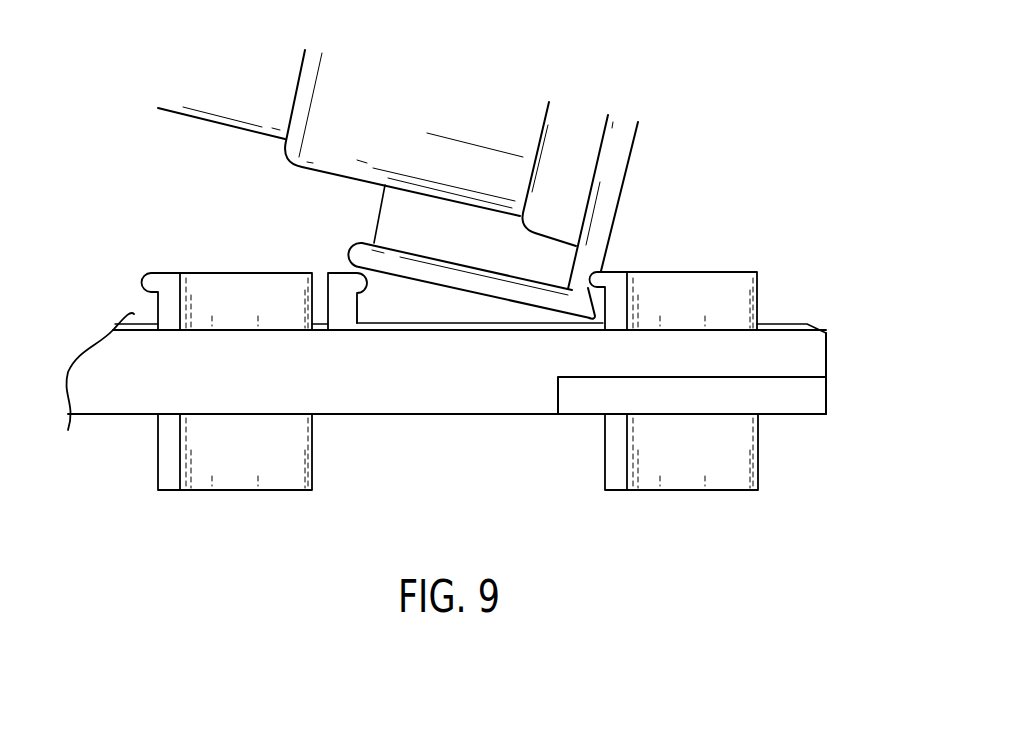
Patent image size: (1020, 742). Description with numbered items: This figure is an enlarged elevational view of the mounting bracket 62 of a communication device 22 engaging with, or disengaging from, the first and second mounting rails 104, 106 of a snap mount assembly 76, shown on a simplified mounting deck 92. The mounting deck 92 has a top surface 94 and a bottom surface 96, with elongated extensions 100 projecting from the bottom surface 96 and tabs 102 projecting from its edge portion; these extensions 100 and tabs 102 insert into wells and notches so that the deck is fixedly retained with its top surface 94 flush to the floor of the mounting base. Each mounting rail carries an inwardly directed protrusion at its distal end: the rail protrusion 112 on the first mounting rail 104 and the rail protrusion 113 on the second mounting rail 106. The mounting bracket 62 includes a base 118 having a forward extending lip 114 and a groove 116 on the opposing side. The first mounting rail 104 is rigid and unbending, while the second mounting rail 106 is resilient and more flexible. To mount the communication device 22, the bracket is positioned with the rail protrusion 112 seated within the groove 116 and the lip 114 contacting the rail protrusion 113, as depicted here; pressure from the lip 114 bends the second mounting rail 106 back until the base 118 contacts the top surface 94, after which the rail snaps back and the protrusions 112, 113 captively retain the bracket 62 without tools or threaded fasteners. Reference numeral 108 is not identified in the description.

The communication device 22 is at (450, 110).
The mounting bracket 62 is at (412, 226).
The snap mount assembly 76 is at (106, 422).
The mounting deck 92 is at (70, 354).
The top surface 94 is at (790, 322).
The bottom surface 96 is at (432, 416).
The elongated extension 100 is at (232, 482).
The tab 102 is at (792, 408).
The first mounting rail 104 is at (171, 266).
The second mounting rail 106 is at (330, 263).
The sleeve 108 is at (216, 272).
The rail protrusion 112 is at (143, 276).
The rail protrusion 113 is at (372, 293).
The lip 114 is at (352, 250).
The groove 116 is at (590, 284).
The base 118 is at (493, 292).